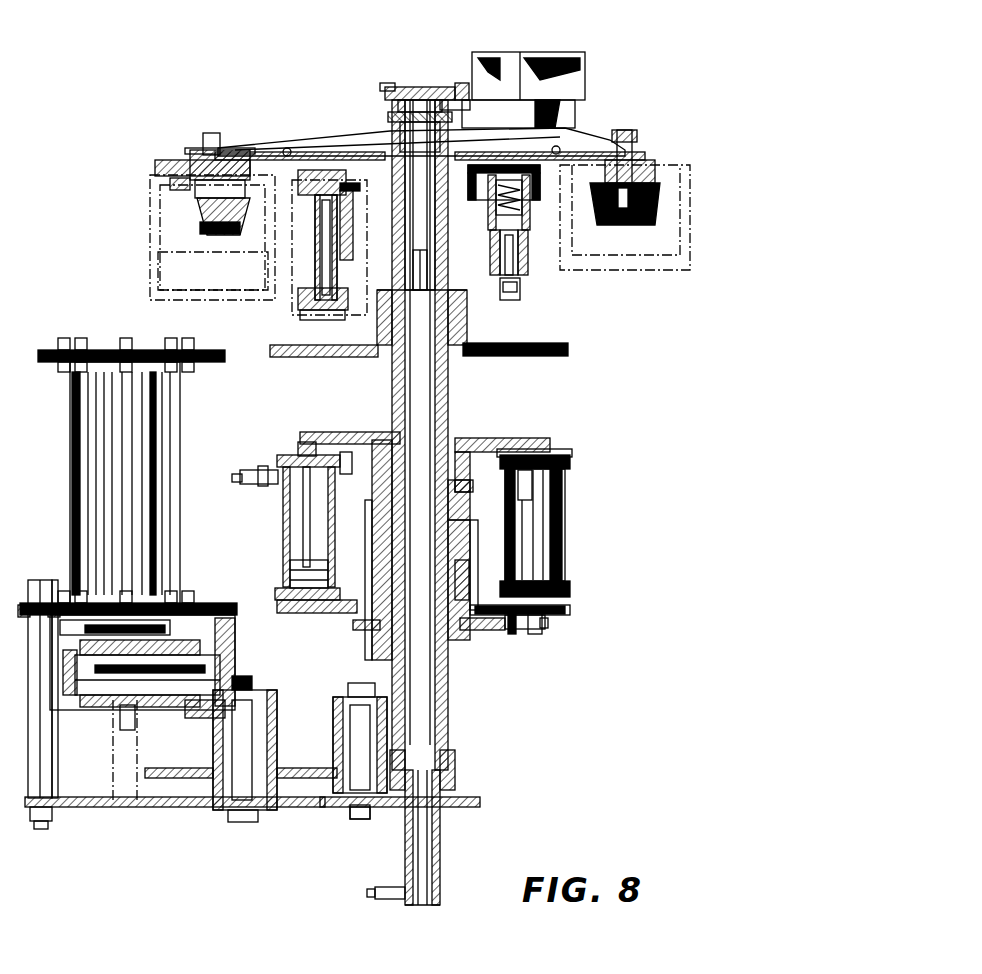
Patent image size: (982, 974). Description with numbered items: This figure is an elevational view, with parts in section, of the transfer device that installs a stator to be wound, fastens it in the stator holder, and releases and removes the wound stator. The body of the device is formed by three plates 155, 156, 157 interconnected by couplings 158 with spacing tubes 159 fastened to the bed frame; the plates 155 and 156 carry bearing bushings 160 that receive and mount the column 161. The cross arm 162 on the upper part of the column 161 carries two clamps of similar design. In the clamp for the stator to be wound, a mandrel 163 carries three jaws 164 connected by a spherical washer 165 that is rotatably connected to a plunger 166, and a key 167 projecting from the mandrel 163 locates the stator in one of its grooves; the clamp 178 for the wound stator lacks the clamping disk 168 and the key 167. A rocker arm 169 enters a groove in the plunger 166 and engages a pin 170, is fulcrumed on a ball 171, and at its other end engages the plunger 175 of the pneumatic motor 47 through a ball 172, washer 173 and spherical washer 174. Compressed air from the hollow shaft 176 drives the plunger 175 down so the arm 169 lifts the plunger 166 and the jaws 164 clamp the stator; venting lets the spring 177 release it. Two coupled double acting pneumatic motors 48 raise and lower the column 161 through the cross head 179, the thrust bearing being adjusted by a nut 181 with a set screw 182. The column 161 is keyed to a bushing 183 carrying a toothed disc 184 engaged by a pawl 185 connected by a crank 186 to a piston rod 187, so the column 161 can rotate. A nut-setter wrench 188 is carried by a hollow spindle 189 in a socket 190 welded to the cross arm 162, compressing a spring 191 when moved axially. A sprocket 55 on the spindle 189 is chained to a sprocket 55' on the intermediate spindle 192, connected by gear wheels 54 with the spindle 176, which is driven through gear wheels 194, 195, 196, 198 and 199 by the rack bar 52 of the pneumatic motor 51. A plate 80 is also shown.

The pneumatic motor 47 is at (440, 86).
The double acting pneumatic motors 48 is at (280, 510).
The pneumatic motor 51 is at (178, 578).
The rack bar 52 is at (128, 750).
The gear wheels 54 is at (310, 305).
The sprocket 55 is at (599, 135).
The sprocket 55' is at (266, 143).
The plate 80 is at (355, 438).
The plate 155 is at (550, 348).
The plate 156 is at (568, 605).
The plate 157 is at (470, 800).
The couplings 158 is at (45, 778).
The spacing tubes 159 is at (55, 755).
The bearing bushings 160 is at (450, 315).
The column 161 is at (448, 440).
The cross arm 162 is at (330, 152).
The mandrel 163 is at (183, 160).
The jaws 164 is at (240, 290).
The spherical washer 165 is at (160, 250).
The plunger 166 is at (172, 183).
The key 167 is at (200, 210).
The clamping disk 168 is at (155, 165).
The rocker arm 169 is at (232, 148).
The pin 170 is at (207, 140).
The ball 171 is at (287, 150).
The ball 172 is at (392, 125).
The washer 173 is at (388, 100).
The spherical washer 174 is at (462, 100).
The plunger 175 is at (483, 70).
The hollow shaft 176 is at (432, 262).
The spring 177 is at (200, 228).
The clamp 178 is at (660, 183).
The cross head 179 is at (305, 445).
The nut 181 is at (468, 490).
The set screw 182 is at (480, 460).
The bushing 183 is at (465, 593).
The toothed disc 184 is at (365, 628).
The pawl 185 is at (512, 635).
The crank 186 is at (545, 626).
The piston rod 187 is at (540, 635).
The wrench 188 is at (500, 290).
The hollow spindle 189 is at (535, 195).
The socket 190 is at (530, 255).
The spring 191 is at (495, 215).
The intermediate spindle 192 is at (320, 240).
The gear wheel 194 is at (452, 780).
The gear wheel 195 is at (340, 720).
The gear wheel 196 is at (272, 788).
The gear wheel 198 is at (195, 712).
The gear wheel 199 is at (100, 705).